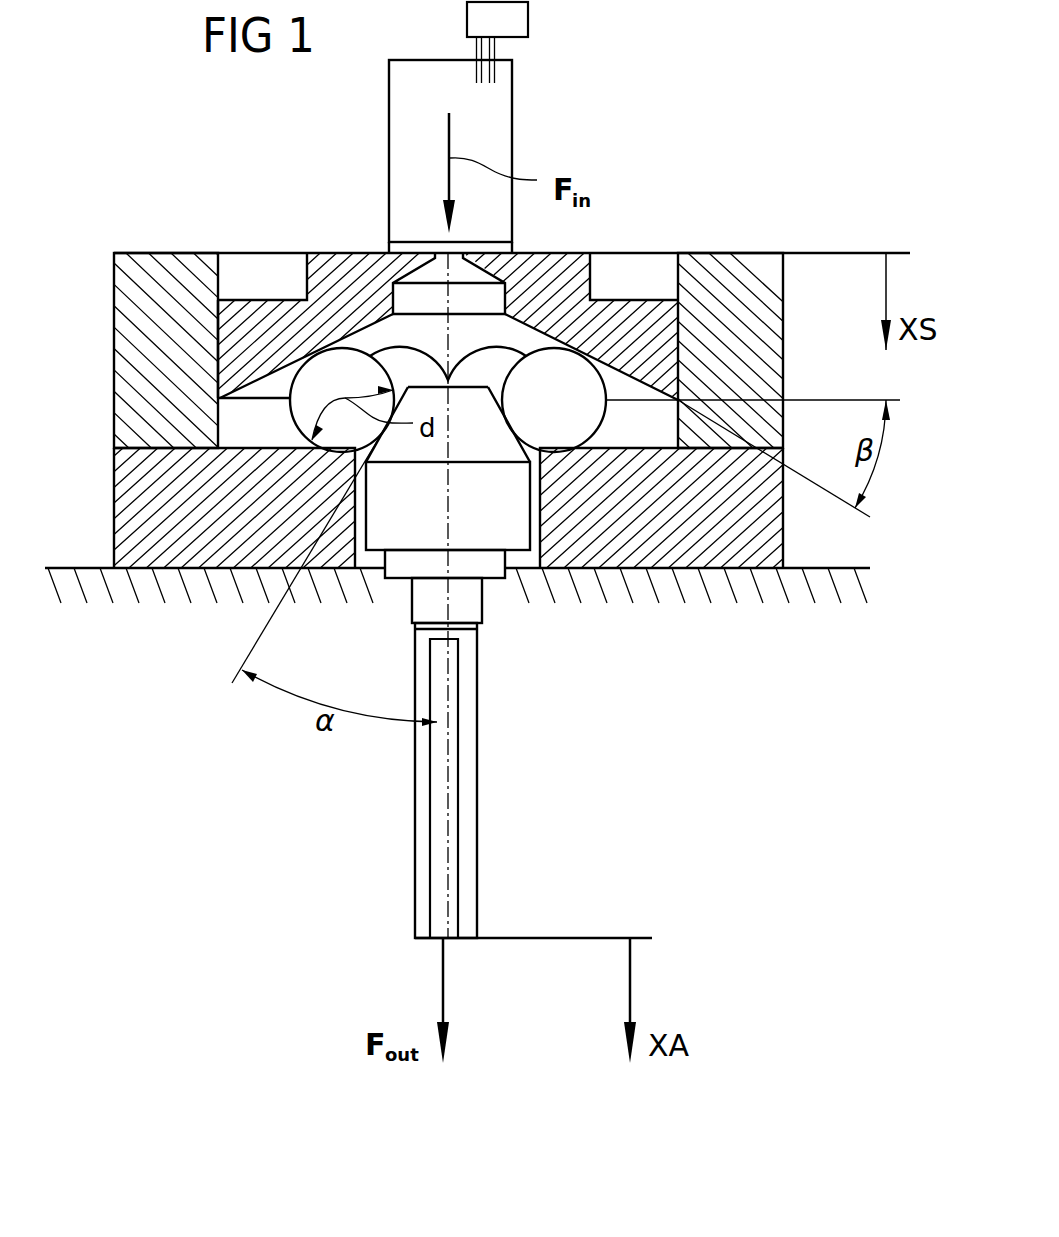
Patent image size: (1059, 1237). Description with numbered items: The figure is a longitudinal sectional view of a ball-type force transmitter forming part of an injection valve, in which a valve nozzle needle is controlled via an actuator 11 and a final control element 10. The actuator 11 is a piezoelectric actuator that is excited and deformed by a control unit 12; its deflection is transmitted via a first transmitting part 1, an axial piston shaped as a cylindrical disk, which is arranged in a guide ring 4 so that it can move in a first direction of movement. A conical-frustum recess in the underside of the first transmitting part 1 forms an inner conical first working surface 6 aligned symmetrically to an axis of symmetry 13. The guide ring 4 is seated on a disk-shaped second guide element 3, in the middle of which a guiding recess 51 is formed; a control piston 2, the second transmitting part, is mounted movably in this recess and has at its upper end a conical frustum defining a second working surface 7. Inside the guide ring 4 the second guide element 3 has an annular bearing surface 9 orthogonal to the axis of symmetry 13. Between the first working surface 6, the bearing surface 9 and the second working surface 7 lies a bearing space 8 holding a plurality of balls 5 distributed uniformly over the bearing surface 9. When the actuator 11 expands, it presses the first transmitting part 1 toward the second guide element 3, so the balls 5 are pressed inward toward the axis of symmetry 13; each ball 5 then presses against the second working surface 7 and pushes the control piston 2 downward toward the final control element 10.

The first transmitting part 1 is at (350, 277).
The control piston 2 is at (382, 527).
The second guide element 3 is at (137, 515).
The guide ring 4 is at (155, 283).
The balls 5 is at (322, 377).
The first working surface 6 is at (264, 400).
The second working surface 7 is at (404, 446).
The bearing space 8 is at (235, 425).
The bearing surface 9 is at (318, 450).
The final control element 10 is at (456, 805).
The actuator 11 is at (500, 125).
The control unit 12 is at (520, 20).
The axis of symmetry 13 is at (446, 870).
The guiding recess 51 is at (510, 585).